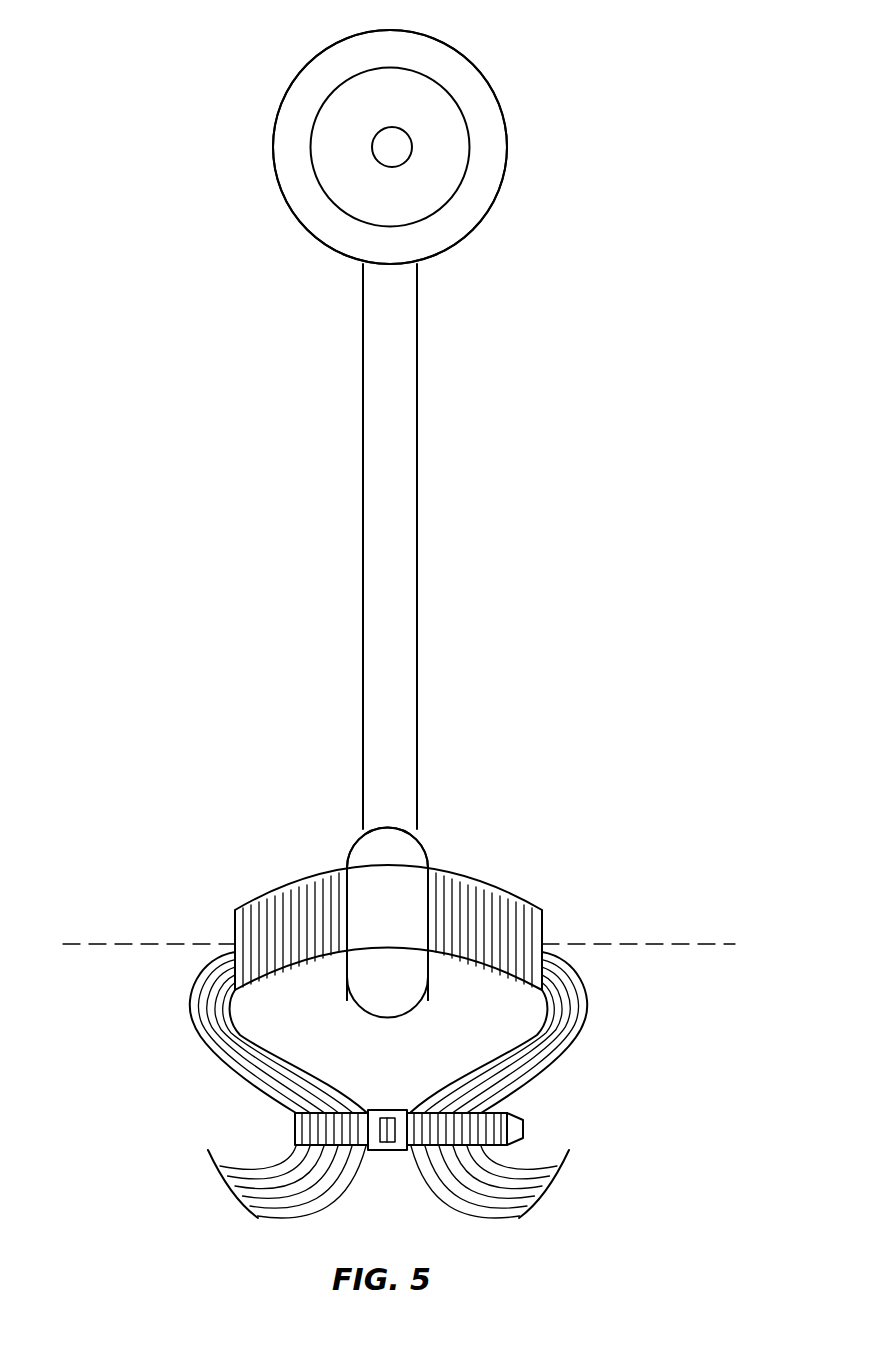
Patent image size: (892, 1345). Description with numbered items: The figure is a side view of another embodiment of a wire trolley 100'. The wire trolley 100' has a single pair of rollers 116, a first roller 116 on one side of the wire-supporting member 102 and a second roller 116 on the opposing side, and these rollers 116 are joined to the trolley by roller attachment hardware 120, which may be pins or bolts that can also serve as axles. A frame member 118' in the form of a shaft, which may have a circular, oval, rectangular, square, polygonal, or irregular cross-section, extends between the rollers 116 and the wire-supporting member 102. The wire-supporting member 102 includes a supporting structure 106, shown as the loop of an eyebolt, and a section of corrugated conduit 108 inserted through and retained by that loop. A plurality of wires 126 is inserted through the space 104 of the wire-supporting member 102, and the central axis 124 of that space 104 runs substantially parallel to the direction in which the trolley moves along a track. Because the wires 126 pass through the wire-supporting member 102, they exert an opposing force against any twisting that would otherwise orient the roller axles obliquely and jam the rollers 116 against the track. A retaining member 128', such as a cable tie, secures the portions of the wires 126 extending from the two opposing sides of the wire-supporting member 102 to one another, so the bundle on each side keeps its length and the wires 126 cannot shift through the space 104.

The wire trolley 100' is at (285, 509).
The rollers 116 is at (443, 60).
The roller attachment hardware 120 is at (395, 143).
The frame member 118' is at (446, 546).
The wire-supporting member 102 is at (450, 986).
The supporting structure 106 is at (388, 1027).
The section of corrugated conduit 108 is at (483, 902).
The central axis 124 is at (148, 944).
The space 104 is at (567, 952).
The wires 126 is at (535, 1086).
The retaining member 128' is at (409, 1177).